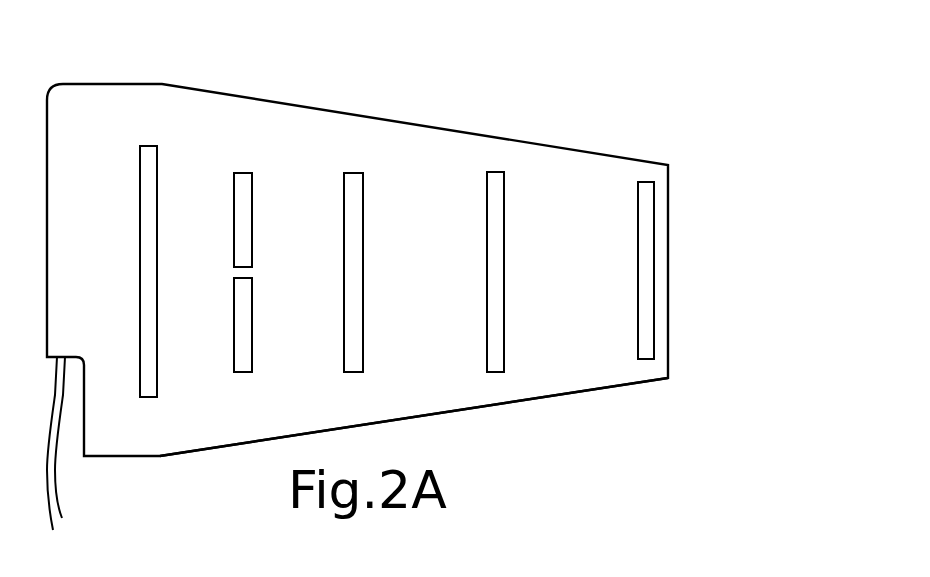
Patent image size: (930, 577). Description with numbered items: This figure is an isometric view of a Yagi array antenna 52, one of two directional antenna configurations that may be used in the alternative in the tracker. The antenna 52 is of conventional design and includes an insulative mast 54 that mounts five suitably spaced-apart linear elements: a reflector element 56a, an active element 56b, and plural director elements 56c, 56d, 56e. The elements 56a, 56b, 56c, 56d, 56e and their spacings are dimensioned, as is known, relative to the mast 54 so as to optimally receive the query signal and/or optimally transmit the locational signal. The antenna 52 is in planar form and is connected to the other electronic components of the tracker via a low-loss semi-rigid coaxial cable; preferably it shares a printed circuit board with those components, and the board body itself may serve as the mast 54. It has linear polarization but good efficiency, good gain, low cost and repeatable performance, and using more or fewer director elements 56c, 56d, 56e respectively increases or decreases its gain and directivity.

The Yagi array antenna 52 is at (553, 121).
The insulative mast 54 is at (587, 391).
The reflector element 56a is at (656, 270).
The active element 56b is at (504, 270).
The director element 56c is at (363, 272).
The director element 56d is at (252, 207).
The director element 56e is at (157, 186).